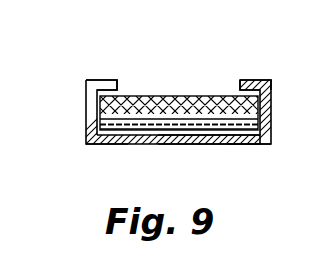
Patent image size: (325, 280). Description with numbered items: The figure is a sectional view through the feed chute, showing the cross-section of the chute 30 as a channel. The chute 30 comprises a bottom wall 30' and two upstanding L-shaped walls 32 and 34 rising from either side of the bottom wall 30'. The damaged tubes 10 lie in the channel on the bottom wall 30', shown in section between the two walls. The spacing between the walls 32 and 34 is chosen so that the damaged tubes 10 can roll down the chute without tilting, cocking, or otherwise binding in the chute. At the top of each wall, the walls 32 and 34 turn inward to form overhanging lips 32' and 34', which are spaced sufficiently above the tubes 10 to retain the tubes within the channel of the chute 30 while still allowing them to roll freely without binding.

The damaged tubes 10 is at (175, 88).
The chute 30 is at (176, 126).
The bottom wall 30' is at (209, 154).
The L-shaped wall 32 is at (262, 113).
The overhanging lip 32' is at (252, 60).
The L-shaped wall 34 is at (105, 113).
The overhanging lip 34' is at (100, 62).